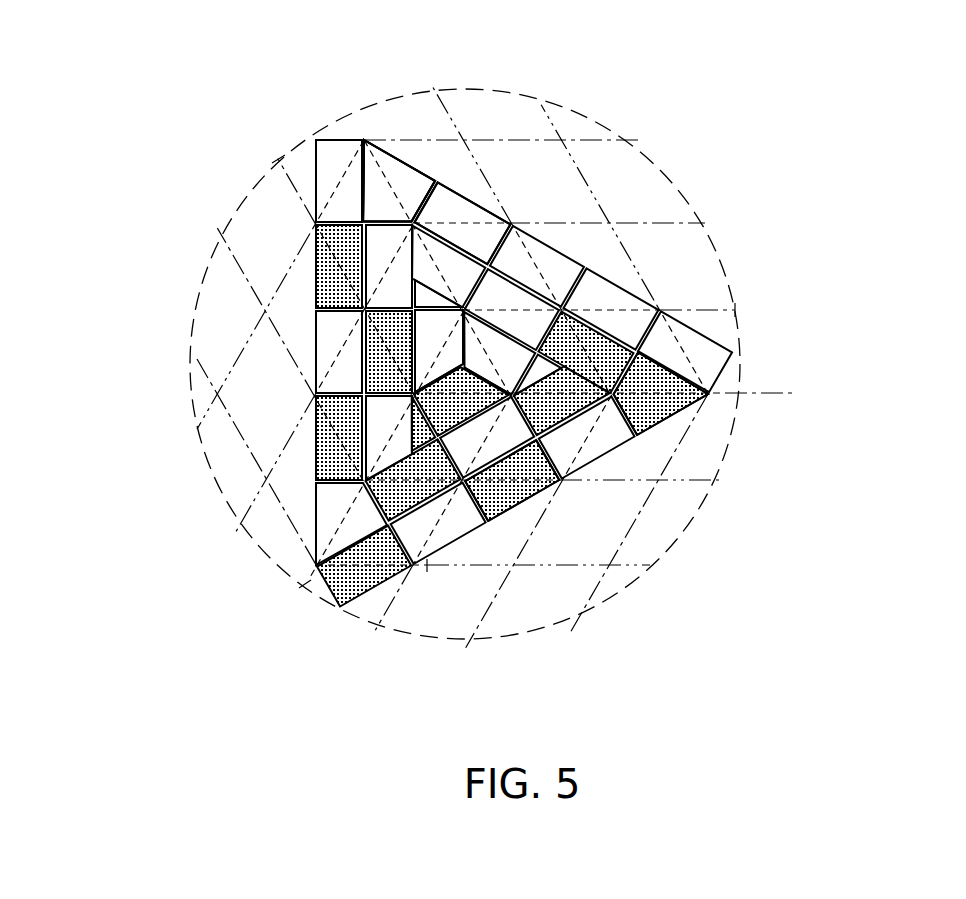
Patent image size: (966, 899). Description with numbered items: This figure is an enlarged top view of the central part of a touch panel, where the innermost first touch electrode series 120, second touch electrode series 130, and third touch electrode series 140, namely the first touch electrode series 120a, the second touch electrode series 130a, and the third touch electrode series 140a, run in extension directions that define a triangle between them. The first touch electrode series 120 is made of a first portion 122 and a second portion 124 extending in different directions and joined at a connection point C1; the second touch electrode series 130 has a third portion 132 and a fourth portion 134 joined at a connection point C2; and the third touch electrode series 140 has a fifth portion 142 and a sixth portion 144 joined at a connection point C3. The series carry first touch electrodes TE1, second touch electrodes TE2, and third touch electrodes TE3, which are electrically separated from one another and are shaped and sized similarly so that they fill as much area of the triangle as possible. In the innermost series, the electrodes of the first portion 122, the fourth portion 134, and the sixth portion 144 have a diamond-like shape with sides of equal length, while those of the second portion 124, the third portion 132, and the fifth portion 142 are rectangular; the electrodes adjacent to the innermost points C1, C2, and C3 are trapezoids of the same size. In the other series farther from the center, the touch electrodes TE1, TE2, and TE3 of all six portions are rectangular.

The first touch electrode series 120 is at (646, 248).
The innermost first touch electrode series 120a is at (388, 178).
The first portion 122 is at (660, 303).
The second portion 124 is at (736, 413).
The second touch electrode series 130 is at (266, 336).
The innermost second touch electrode series 130a is at (418, 340).
The third portion 132 is at (364, 140).
The fourth portion 134 is at (312, 177).
The third touch electrode series 140 is at (488, 551).
The innermost third touch electrode series 140a is at (665, 400).
The fifth portion 142 is at (290, 532).
The sixth portion 144 is at (430, 558).
The first touch electrode TE1 is at (415, 185).
The second touch electrode TE2 is at (460, 210).
The third touch electrode TE3 is at (500, 500).
The connection point C1 is at (513, 388).
The connection point C2 is at (458, 305).
The connection point C3 is at (409, 402).